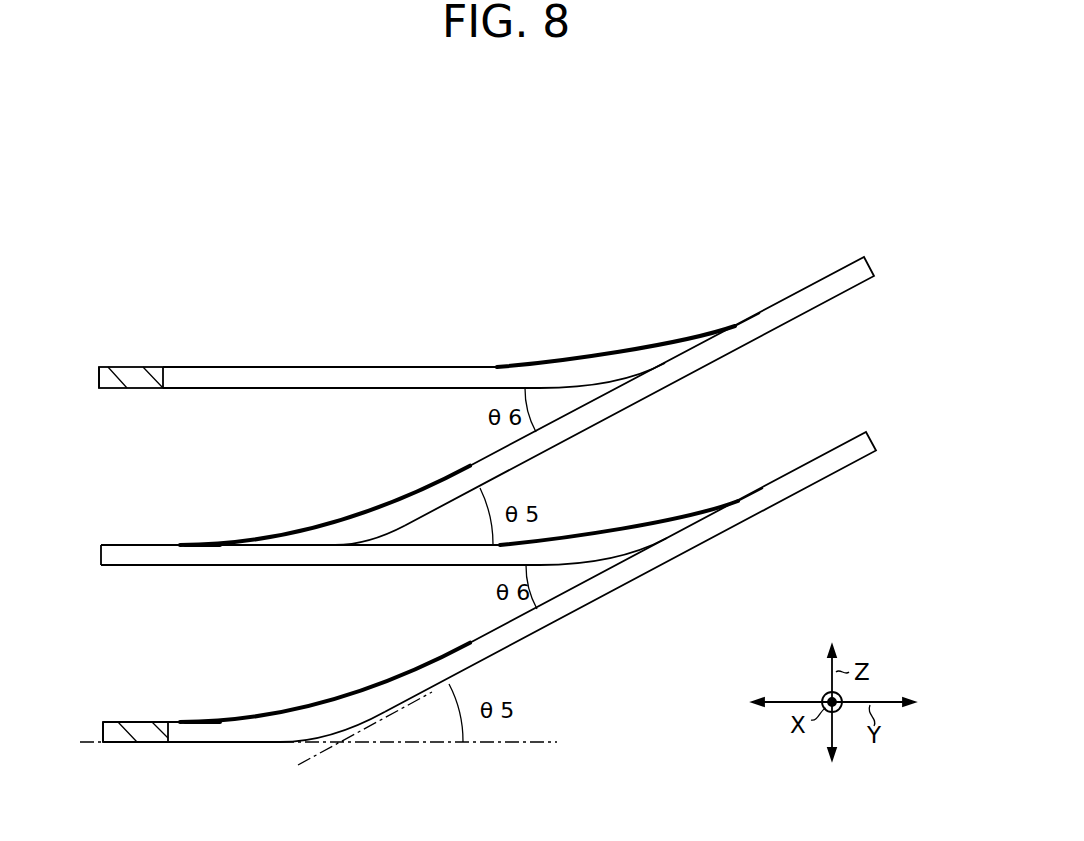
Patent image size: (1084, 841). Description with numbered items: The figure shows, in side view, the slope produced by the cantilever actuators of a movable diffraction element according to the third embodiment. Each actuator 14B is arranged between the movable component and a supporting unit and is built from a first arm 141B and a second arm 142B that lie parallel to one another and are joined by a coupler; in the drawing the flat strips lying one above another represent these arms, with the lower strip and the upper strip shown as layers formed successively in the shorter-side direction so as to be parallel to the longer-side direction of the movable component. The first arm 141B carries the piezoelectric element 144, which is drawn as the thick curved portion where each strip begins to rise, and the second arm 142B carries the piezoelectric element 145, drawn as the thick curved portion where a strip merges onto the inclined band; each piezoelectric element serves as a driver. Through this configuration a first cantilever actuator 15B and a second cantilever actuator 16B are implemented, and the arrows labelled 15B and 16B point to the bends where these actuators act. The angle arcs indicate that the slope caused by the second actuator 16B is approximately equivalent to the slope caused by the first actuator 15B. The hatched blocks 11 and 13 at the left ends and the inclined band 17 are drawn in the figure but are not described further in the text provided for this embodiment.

The actuator 14B is at (254, 304).
The first plate member 11 is at (127, 374).
The third plate member 13 is at (142, 738).
The second arm 142B is at (438, 376).
The first arm 141B is at (382, 520).
The piezoelectric element 144 is at (328, 518).
The piezoelectric element 145 is at (647, 348).
The first cantilever actuator 15B is at (216, 520).
The second cantilever actuator 16B is at (730, 315).
The inclined portion 17 is at (763, 325).